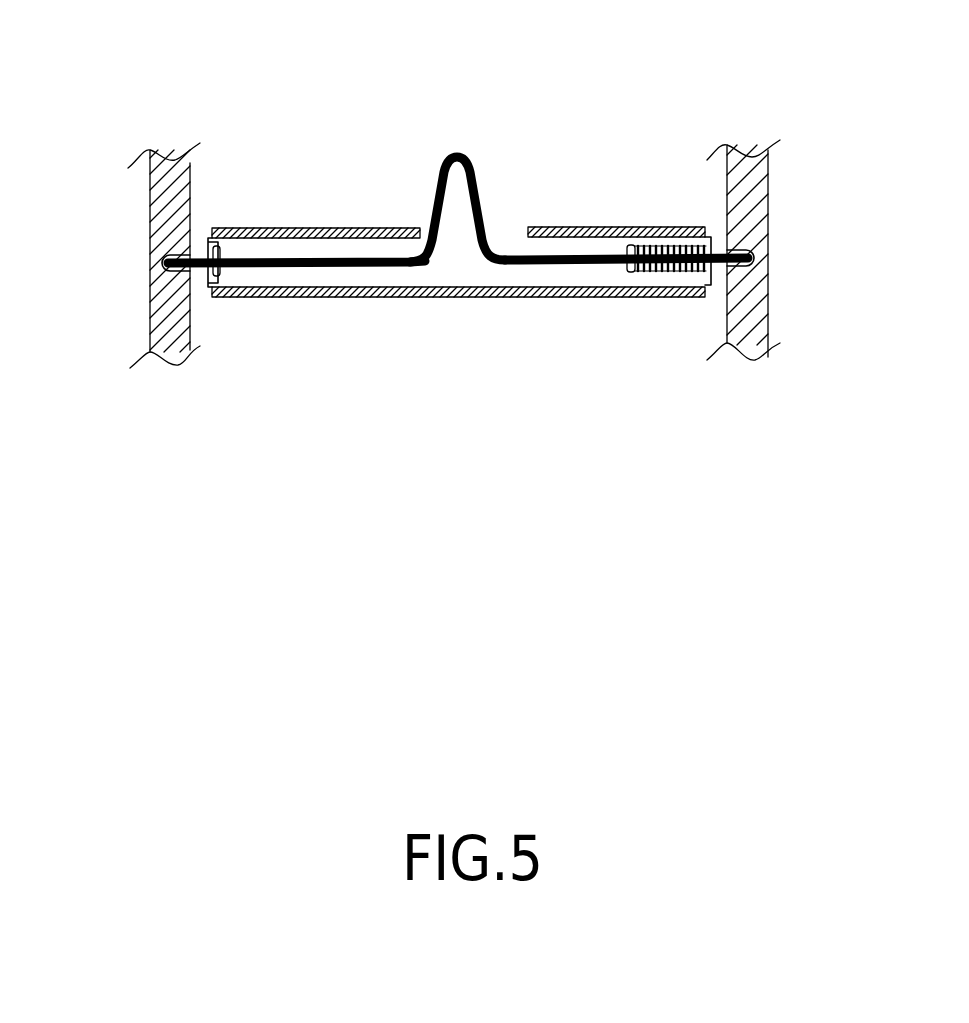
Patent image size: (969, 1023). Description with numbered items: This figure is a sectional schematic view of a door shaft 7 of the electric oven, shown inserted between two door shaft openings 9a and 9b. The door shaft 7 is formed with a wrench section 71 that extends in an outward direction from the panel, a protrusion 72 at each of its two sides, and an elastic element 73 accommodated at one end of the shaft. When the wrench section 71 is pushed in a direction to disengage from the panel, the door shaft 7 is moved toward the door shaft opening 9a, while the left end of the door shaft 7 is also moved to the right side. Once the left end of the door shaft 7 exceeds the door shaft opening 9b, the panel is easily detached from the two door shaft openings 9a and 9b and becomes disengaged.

The door shaft 7 is at (343, 258).
The wrench section 71 is at (463, 157).
The protrusion 72 is at (218, 240).
The elastic element 73 is at (662, 247).
The door shaft opening 9a is at (768, 227).
The door shaft opening 9b is at (167, 255).